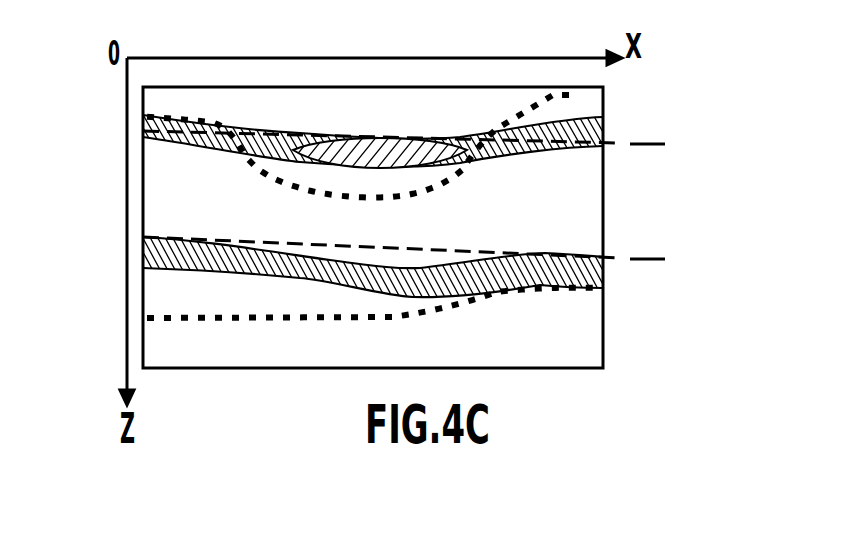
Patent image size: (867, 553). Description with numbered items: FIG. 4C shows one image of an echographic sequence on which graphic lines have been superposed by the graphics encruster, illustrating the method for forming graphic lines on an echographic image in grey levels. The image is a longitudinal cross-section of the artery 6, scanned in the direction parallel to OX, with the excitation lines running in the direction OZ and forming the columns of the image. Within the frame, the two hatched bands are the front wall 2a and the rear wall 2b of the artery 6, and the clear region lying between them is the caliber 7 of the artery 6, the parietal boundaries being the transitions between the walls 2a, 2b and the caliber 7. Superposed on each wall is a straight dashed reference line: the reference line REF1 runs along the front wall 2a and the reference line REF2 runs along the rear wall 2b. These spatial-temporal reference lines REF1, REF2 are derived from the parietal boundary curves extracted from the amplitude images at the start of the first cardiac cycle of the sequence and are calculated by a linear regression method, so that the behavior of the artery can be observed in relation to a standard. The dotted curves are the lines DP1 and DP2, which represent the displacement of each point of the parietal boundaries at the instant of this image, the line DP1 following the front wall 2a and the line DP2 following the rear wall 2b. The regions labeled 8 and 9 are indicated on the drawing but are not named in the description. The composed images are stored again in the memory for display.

The artery 6 is at (610, 218).
The caliber 7 is at (553, 187).
The boundary regions 8 is at (338, 113).
The defect region in layer 9 is at (427, 157).
The front wall 2a is at (197, 148).
The rear wall 2b is at (165, 256).
The reference line REF1 is at (665, 145).
The reference line REF2 is at (667, 260).
The parietal displacement line DP1 is at (560, 110).
The parietal displacement line DP2 is at (570, 300).